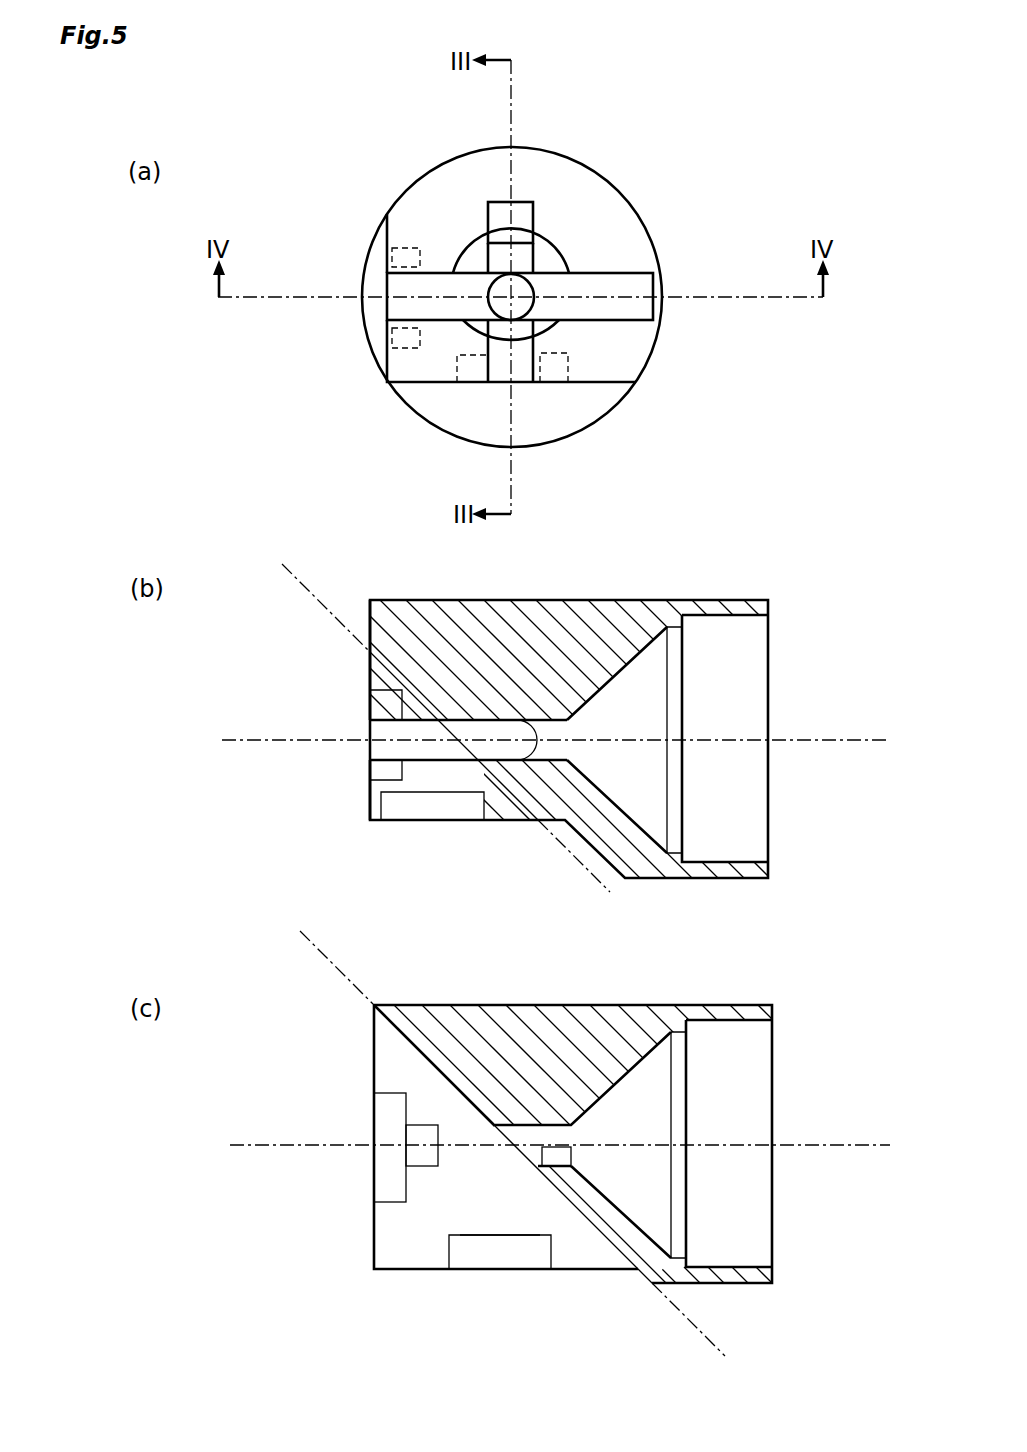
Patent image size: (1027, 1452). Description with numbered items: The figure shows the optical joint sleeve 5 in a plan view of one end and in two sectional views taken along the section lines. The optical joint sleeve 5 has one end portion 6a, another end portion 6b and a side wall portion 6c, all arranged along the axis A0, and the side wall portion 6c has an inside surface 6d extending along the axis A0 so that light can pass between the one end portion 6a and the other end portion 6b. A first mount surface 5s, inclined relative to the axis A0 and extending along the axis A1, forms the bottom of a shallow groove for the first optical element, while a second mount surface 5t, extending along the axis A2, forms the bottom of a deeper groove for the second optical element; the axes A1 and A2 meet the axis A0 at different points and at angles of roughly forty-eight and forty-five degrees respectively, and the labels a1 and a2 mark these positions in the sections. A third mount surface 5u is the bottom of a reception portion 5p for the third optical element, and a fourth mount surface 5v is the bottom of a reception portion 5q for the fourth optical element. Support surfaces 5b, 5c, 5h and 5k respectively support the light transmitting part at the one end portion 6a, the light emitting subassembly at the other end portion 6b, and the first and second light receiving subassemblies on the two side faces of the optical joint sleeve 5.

The optical joint sleeve 5 is at (665, 366).
The support surface 5b is at (547, 236).
The support surface 5c is at (745, 628).
The support surface 5h is at (552, 382).
The support surface 5k is at (387, 268).
The reception portion 5p is at (398, 814).
The reception portion 5q is at (491, 1250).
The first mount surface 5s is at (527, 258).
The second mount surface 5t is at (455, 288).
The third mount surface 5u is at (467, 374).
The fourth mount surface 5v is at (392, 250).
The one end portion 6a is at (356, 676).
The another end portion 6b is at (788, 705).
The side wall portion 6c is at (547, 705).
The inside surface 6d is at (498, 307).
The axis A0 is at (276, 742).
The axis A1 is at (518, 130).
The axis A2 is at (298, 300).
The distance a1 is at (486, 744).
The distance a2 is at (548, 1150).